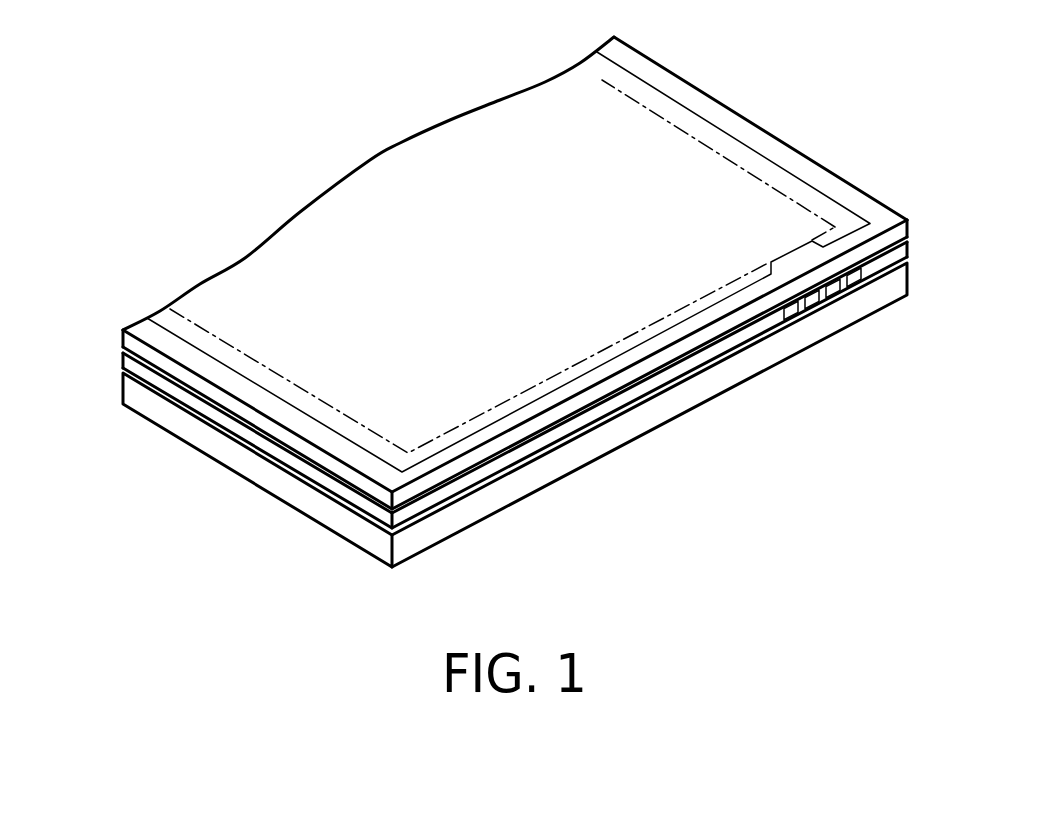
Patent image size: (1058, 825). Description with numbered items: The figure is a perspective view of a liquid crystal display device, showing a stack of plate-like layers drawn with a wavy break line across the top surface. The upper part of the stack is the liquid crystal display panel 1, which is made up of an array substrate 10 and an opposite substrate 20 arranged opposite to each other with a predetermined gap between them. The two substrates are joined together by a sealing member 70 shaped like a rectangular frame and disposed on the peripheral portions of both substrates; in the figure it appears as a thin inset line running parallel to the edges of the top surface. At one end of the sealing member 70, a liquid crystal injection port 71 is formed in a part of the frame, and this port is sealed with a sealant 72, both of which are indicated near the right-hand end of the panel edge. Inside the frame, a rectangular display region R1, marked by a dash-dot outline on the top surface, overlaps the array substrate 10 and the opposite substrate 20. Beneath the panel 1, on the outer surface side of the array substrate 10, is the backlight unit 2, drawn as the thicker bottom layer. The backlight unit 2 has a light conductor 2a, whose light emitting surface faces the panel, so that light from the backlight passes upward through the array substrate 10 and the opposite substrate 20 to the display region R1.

The liquid crystal display panel 1 is at (472, 306).
The backlight unit 2 is at (515, 415).
The light conductor 2a is at (230, 482).
The array substrate 10 is at (515, 408).
The opposite substrate 20 is at (515, 288).
The sealing member 70 is at (625, 352).
The liquid crystal injection port 71 is at (827, 288).
The sealant 72 is at (815, 291).
The display region R1 is at (436, 200).